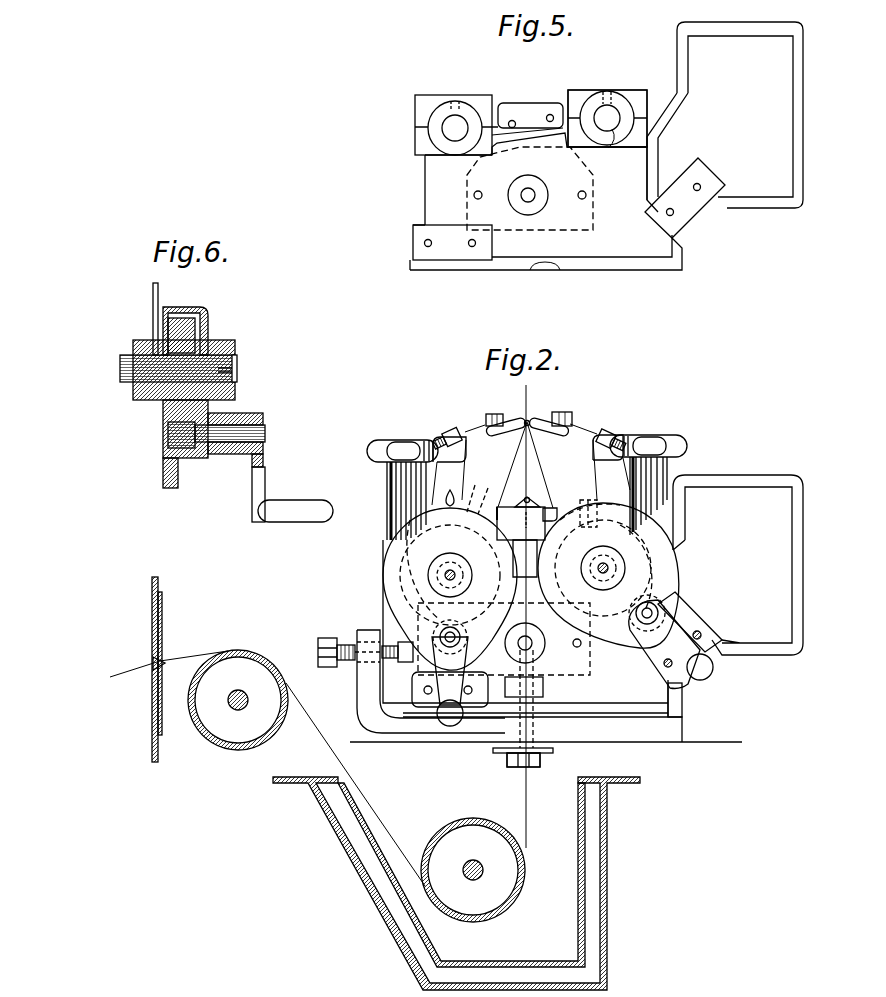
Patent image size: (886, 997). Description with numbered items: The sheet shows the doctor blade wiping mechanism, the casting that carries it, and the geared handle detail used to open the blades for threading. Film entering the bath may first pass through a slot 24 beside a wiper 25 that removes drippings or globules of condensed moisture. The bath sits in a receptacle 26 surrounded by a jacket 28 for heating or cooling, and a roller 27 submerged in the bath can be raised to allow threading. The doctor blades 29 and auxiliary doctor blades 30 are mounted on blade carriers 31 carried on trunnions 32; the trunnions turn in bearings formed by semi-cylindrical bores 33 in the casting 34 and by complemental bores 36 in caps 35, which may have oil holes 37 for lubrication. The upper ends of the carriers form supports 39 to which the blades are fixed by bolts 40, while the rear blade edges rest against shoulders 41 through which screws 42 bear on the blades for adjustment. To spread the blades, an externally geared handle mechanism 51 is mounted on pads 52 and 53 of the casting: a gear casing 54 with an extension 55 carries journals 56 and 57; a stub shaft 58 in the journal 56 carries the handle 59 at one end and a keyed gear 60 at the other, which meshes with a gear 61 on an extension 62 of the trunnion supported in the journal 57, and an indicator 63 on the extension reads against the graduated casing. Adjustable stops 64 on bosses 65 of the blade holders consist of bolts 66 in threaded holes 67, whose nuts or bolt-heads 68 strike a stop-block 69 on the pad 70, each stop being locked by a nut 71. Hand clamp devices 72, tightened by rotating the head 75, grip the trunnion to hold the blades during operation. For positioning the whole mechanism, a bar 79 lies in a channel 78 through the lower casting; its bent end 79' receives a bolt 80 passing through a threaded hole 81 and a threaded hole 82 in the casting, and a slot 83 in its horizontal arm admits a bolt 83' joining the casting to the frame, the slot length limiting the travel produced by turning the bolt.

In FIG. 2, the slot 24 is at (152, 661).
In FIG. 2, the wiper 25 is at (163, 661).
In FIG. 2, the receptacle 26 is at (572, 880).
In FIG. 2, the roller 27 is at (484, 822).
In FIG. 2, the jacket 28 is at (598, 921).
In FIG. 2, the doctor blades 29 is at (540, 411).
In FIG. 2, the auxiliary doctor blades 30 is at (537, 490).
In FIG. 2, the blade carriers 31 is at (590, 498).
In FIG. 2, the trunnions 32 is at (610, 568).
In FIG. 5, the semi-cylindrical bores 33 is at (609, 148).
In FIG. 5, the casting 34 is at (546, 180).
In FIG. 2, the casting 34 is at (525, 628).
In FIG. 5, the caps 35 is at (629, 93).
In FIG. 5, the bores 36 is at (601, 108).
In FIG. 5, the oil holes 37 is at (460, 107).
In FIG. 2, the supports 39 is at (466, 421).
In FIG. 2, the bolts 40 is at (492, 411).
In FIG. 2, the shoulders 41 is at (573, 422).
In FIG. 2, the screws 42 is at (615, 424).
In FIG. 2, the handle mechanism 51 is at (478, 666).
In FIG. 5, the pad 52 is at (452, 242).
In FIG. 2, the pad 52 is at (412, 690).
In FIG. 5, the pad 53 is at (690, 210).
In FIG. 2, the pad 53 is at (722, 645).
In FIG. 6, the gear casing 54 is at (201, 309).
In FIG. 6, the extension 55 is at (184, 480).
In FIG. 2, the extension 55 is at (700, 620).
In FIG. 6, the journal 56 is at (228, 419).
In FIG. 6, the journal 57 is at (214, 350).
In FIG. 2, the journal 57 is at (603, 553).
In FIG. 6, the stub shaft 58 is at (265, 433).
In FIG. 2, the stub shaft 58 is at (640, 620).
In FIG. 6, the handle 59 is at (301, 501).
In FIG. 2, the handle 59 is at (704, 678).
In FIG. 6, the gear 60 is at (168, 439).
In FIG. 2, the gear 60 is at (462, 617).
In FIG. 6, the gear 61 is at (168, 414).
In FIG. 2, the gear 61 is at (466, 532).
In FIG. 6, the extension 62 is at (121, 372).
In FIG. 6, the indicator 63 is at (158, 292).
In FIG. 2, the indicator 63 is at (464, 495).
In FIG. 2, the adjustable stops 64 is at (666, 580).
In FIG. 2, the bosses 65 is at (600, 506).
In FIG. 2, the bolts 66 is at (565, 509).
In FIG. 2, the threaded holes 67 is at (447, 496).
In FIG. 2, the nuts or bolt-heads 68 is at (497, 512).
In FIG. 2, the stop-block 69 is at (521, 523).
In FIG. 5, the pad 70 is at (572, 232).
In FIG. 2, the nut 71 is at (486, 494).
In FIG. 2, the hand clamp devices 72 is at (387, 495).
In FIG. 2, the head 75 is at (396, 443).
In FIG. 2, the channel 78 is at (682, 713).
In FIG. 2, the bar 79 is at (546, 741).
In FIG. 2, the end 79' is at (430, 671).
In FIG. 2, the bolt 80 is at (326, 638).
In FIG. 2, the threaded hole 81 is at (362, 667).
In FIG. 2, the threaded hole 82 is at (403, 643).
In FIG. 2, the slot 83 is at (505, 709).
In FIG. 2, the bolt 83' is at (539, 762).